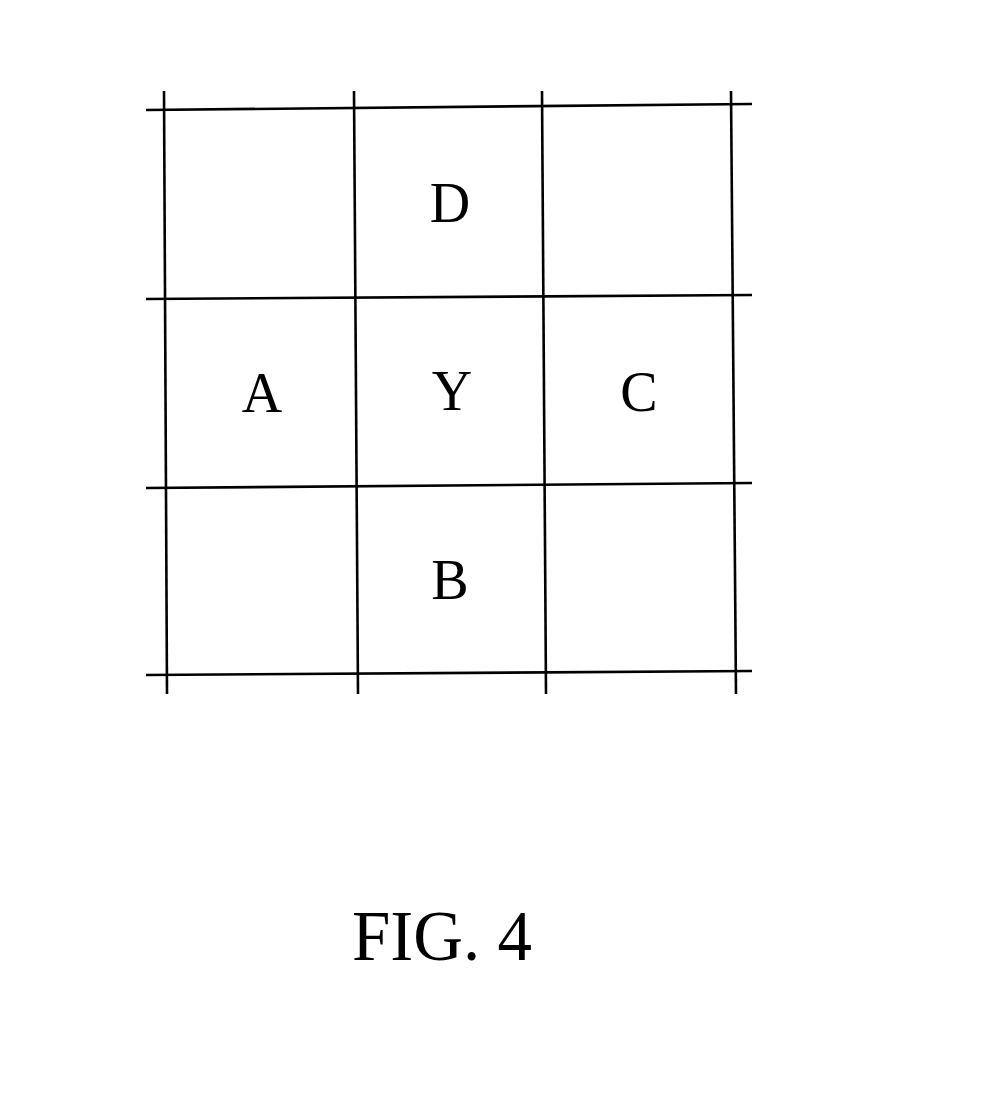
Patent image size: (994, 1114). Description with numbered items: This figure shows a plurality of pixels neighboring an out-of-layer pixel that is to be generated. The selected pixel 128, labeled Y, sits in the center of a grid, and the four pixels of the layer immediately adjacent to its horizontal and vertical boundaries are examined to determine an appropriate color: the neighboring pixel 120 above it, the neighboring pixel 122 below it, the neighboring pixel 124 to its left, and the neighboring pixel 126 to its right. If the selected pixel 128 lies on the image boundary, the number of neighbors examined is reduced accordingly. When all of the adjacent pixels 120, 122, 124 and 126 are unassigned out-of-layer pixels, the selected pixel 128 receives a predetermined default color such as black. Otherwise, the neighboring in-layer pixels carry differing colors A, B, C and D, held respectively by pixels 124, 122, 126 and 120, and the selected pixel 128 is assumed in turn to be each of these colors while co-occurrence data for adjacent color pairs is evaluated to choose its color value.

The neighboring pixel 120 is at (439, 125).
The neighboring pixel 122 is at (443, 653).
The neighboring pixel 124 is at (185, 373).
The neighboring pixel 126 is at (713, 368).
The selected pixel 128 is at (525, 325).